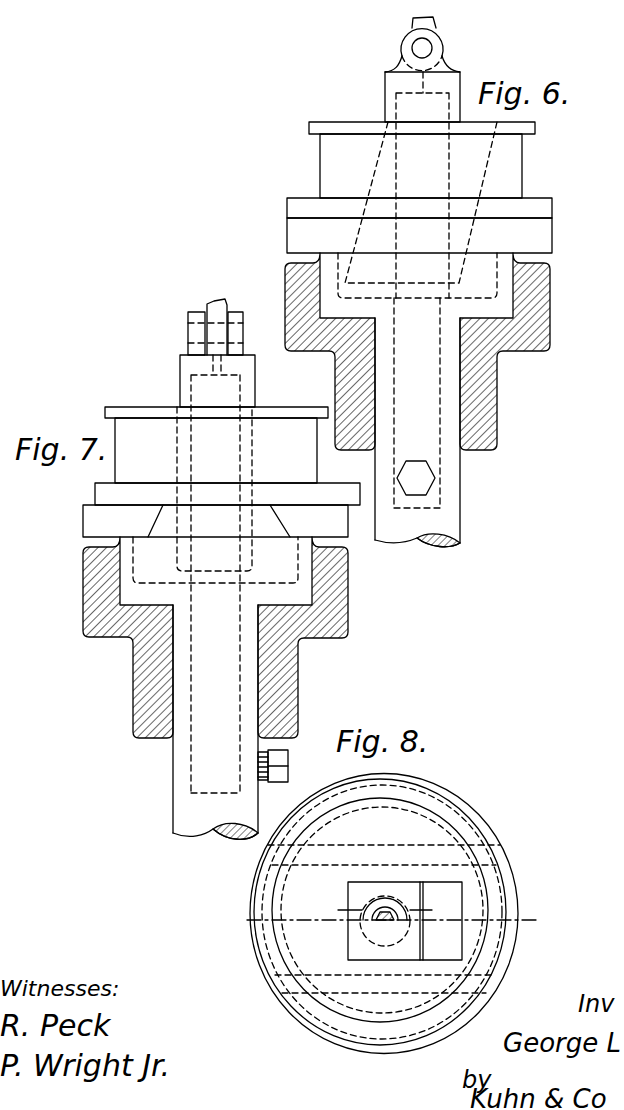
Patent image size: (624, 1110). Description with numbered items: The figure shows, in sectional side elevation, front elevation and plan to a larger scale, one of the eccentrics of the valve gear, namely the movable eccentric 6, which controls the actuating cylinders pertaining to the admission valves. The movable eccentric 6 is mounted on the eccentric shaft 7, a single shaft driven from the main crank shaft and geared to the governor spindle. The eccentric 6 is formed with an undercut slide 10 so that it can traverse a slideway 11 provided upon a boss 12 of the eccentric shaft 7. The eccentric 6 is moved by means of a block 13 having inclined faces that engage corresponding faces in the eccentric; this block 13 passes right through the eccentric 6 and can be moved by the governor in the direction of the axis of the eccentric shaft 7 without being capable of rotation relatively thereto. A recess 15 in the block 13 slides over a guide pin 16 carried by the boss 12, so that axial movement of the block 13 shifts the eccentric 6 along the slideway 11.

In FIG. 6, the movable eccentric 6 is at (422, 290).
In FIG. 7, the movable eccentric 6 is at (216, 574).
In FIG. 8, the movable eccentric 6 is at (380, 910).
In FIG. 6, the eccentric shaft 7 is at (447, 478).
In FIG. 7, the eccentric shaft 7 is at (182, 759).
In FIG. 6, the undercut slide 10 is at (419, 209).
In FIG. 7, the undercut slide 10 is at (227, 508).
In FIG. 8, the undercut slide 10 is at (357, 856).
In FIG. 6, the slideway 11 is at (419, 235).
In FIG. 7, the slideway 11 is at (154, 524).
In FIG. 6, the boss 12 is at (507, 285).
In FIG. 7, the boss 12 is at (303, 572).
In FIG. 6, the block 13 is at (478, 171).
In FIG. 8, the block 13 is at (400, 921).
In FIG. 6, the recess 15 is at (396, 93).
In FIG. 7, the recess 15 is at (238, 373).
In FIG. 6, the guide pin 16 is at (392, 272).
In FIG. 7, the guide pin 16 is at (233, 469).